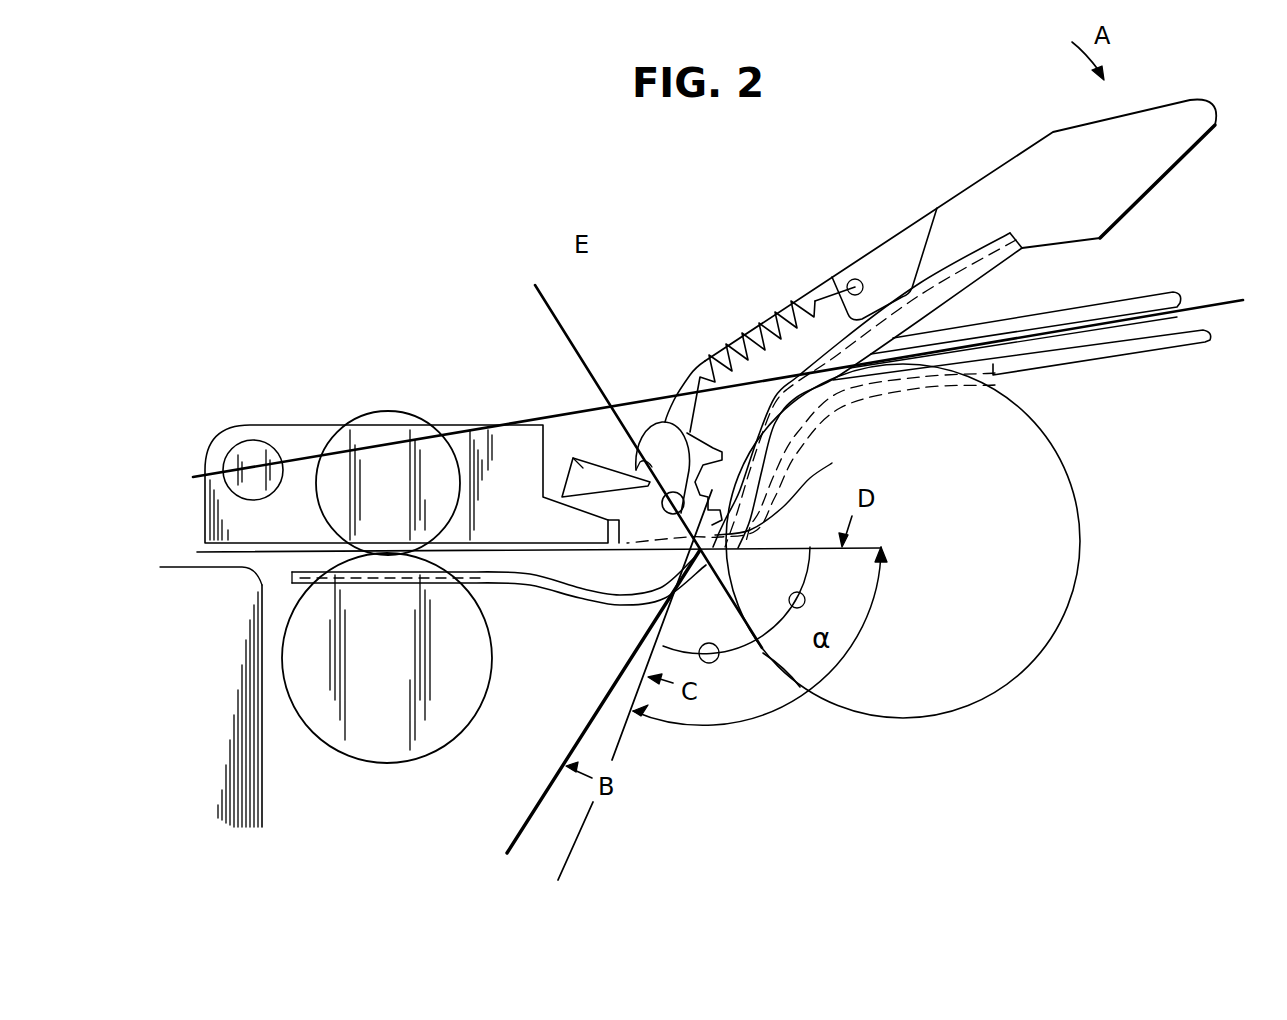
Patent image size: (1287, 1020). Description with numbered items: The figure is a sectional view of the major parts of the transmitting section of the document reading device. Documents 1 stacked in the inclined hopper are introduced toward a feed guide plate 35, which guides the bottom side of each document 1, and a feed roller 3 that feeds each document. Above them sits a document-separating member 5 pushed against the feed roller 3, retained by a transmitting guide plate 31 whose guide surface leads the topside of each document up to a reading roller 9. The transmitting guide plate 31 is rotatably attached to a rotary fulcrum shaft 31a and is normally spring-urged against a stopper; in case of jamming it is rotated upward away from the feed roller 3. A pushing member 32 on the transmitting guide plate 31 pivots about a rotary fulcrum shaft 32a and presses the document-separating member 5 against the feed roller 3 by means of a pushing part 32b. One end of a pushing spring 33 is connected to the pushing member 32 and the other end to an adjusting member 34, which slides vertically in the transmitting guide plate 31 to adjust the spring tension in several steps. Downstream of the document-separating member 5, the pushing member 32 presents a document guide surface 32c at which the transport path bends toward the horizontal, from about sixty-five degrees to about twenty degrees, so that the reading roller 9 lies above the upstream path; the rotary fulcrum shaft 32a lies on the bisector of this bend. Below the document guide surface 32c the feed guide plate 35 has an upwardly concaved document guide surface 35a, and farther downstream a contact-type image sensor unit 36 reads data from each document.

The documents 1 is at (1133, 305).
The feed roller 3 is at (1075, 565).
The document-separating member 5 is at (997, 262).
The reading roller 9 is at (390, 411).
The transmitting guide plate 31 is at (1003, 168).
The rotary fulcrum shaft 31a is at (253, 445).
The pushing member 32 is at (577, 462).
The rotary fulcrum shaft 32a is at (660, 425).
The pushing part 32b is at (700, 395).
The document guide surface 32c is at (795, 487).
The pushing spring 33 is at (760, 330).
The adjusting member 34 is at (900, 247).
The feed guide plate 35 is at (1127, 350).
The document guide surface 35a is at (605, 600).
The contact-type image sensor unit 36 is at (240, 770).